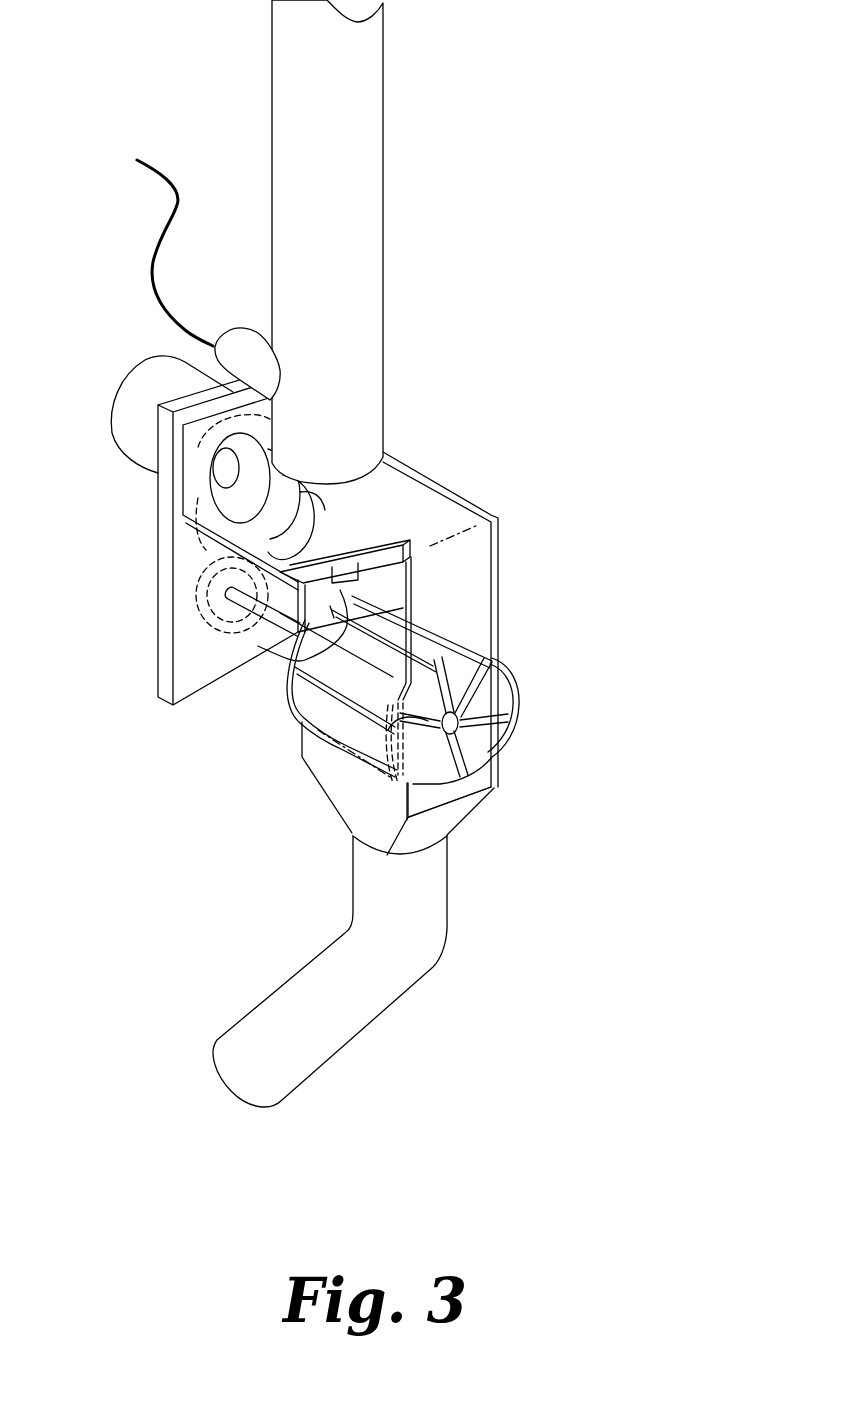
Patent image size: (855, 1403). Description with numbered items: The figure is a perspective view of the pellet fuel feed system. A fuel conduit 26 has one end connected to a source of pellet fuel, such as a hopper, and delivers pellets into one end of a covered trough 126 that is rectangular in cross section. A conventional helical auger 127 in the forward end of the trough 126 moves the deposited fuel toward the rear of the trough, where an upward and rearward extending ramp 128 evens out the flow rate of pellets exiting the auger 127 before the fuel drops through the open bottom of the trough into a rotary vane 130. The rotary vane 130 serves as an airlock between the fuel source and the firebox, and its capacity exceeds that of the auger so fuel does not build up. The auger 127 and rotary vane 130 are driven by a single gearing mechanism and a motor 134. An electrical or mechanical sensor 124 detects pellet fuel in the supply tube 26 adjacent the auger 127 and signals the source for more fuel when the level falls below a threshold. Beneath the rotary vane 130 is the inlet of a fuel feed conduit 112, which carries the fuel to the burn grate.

The fuel conduit 26 is at (348, 190).
The fuel feed conduit 112 is at (430, 943).
The sensor 124 is at (240, 340).
The covered trough 126 is at (437, 462).
The helical auger 127 is at (265, 486).
The ramp 128 is at (295, 625).
The rotary vane 130 is at (481, 732).
The motor 134 is at (127, 397).